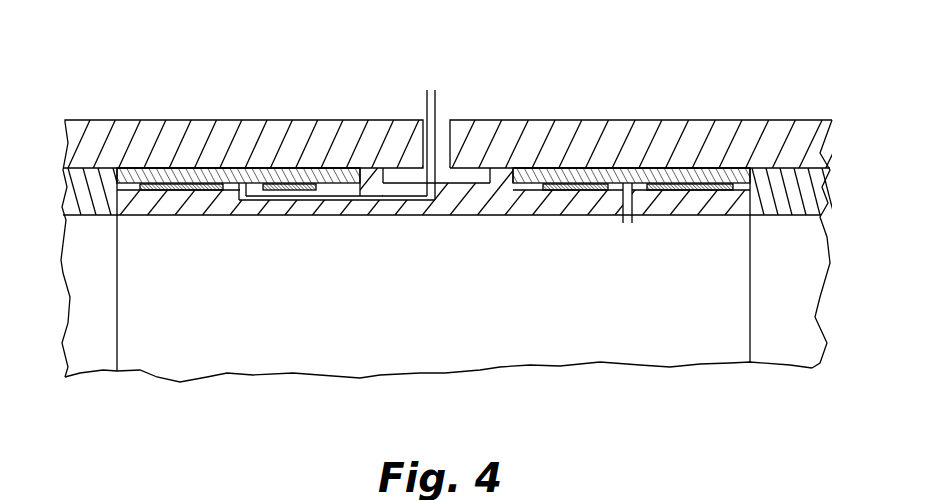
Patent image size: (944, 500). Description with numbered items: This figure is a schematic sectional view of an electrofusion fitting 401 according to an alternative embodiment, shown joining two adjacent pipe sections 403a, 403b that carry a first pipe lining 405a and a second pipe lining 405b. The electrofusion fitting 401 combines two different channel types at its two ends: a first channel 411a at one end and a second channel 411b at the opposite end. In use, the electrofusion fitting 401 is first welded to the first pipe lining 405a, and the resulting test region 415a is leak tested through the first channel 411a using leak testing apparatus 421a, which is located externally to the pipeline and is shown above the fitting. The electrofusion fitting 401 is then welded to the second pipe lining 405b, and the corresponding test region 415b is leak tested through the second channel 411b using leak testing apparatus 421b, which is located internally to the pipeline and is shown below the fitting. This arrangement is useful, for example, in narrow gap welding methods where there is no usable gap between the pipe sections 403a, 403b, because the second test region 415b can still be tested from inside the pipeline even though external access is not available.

The electrofusion fitting 401 is at (463, 197).
The pipe section 403a is at (176, 135).
The pipe section 403b is at (737, 135).
The first pipe lining 405a is at (314, 178).
The second pipe lining 405b is at (577, 176).
The first channel 411a is at (334, 196).
The second channel 411b is at (622, 201).
The test region 415a is at (241, 158).
The test region 415b is at (636, 158).
The leak testing apparatus 421a is at (438, 122).
The leak testing apparatus 421b is at (631, 225).